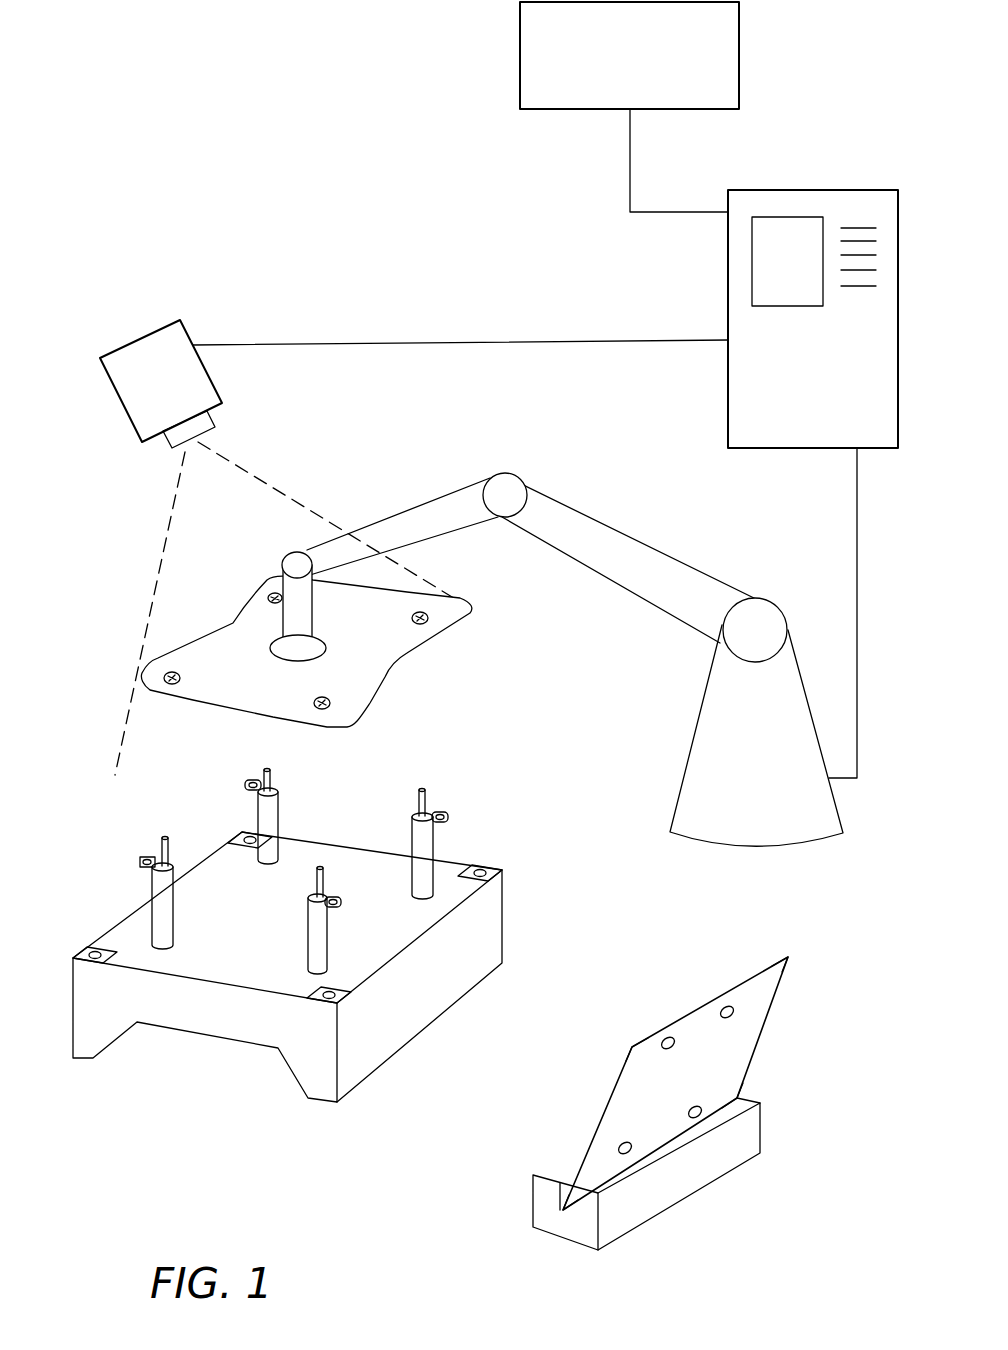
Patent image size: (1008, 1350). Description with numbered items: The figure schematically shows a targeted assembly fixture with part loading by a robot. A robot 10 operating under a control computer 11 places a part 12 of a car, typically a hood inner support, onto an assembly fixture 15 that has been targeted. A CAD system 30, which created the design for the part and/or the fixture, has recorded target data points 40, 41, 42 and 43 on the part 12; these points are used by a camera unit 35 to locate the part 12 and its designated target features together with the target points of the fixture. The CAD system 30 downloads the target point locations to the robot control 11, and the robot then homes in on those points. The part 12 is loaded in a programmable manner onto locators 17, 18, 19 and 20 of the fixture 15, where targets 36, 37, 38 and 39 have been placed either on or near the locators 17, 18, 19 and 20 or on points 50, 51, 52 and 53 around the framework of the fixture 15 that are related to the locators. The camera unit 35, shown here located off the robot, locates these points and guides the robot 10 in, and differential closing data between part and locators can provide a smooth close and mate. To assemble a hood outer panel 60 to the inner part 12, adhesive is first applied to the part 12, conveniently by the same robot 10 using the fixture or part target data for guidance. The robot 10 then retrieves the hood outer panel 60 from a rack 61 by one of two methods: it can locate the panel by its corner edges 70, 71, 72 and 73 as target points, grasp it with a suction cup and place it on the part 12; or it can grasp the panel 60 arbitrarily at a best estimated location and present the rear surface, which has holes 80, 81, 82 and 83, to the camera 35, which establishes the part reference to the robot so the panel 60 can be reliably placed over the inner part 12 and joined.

The robot 10 is at (737, 702).
The control computer 11 is at (825, 373).
The part 12 is at (407, 590).
The assembly fixture 15 is at (72, 1013).
The locator 17 is at (163, 850).
The locator 18 is at (273, 780).
The locator 19 is at (427, 802).
The locator 20 is at (313, 873).
The CAD system 30 is at (520, 55).
The camera unit 35 is at (147, 363).
The target 36 is at (140, 860).
The target 37 is at (248, 782).
The target 38 is at (448, 817).
The target 39 is at (341, 902).
The target data point 40 is at (167, 673).
The target data point 41 is at (268, 597).
The target data point 42 is at (430, 617).
The target data point 43 is at (337, 698).
The point 50 is at (97, 943).
The point 51 is at (240, 833).
The point 52 is at (503, 872).
The point 53 is at (343, 992).
The hood outer panel 60 is at (778, 988).
The rack 61 is at (762, 1133).
The corner edge 70 is at (632, 1047).
The corner edge 71 is at (788, 957).
The corner edge 72 is at (740, 1098).
The corner edge 73 is at (563, 1210).
The hole 80 is at (670, 1037).
The hole 81 is at (727, 1007).
The hole 82 is at (698, 1107).
The hole 83 is at (623, 1147).